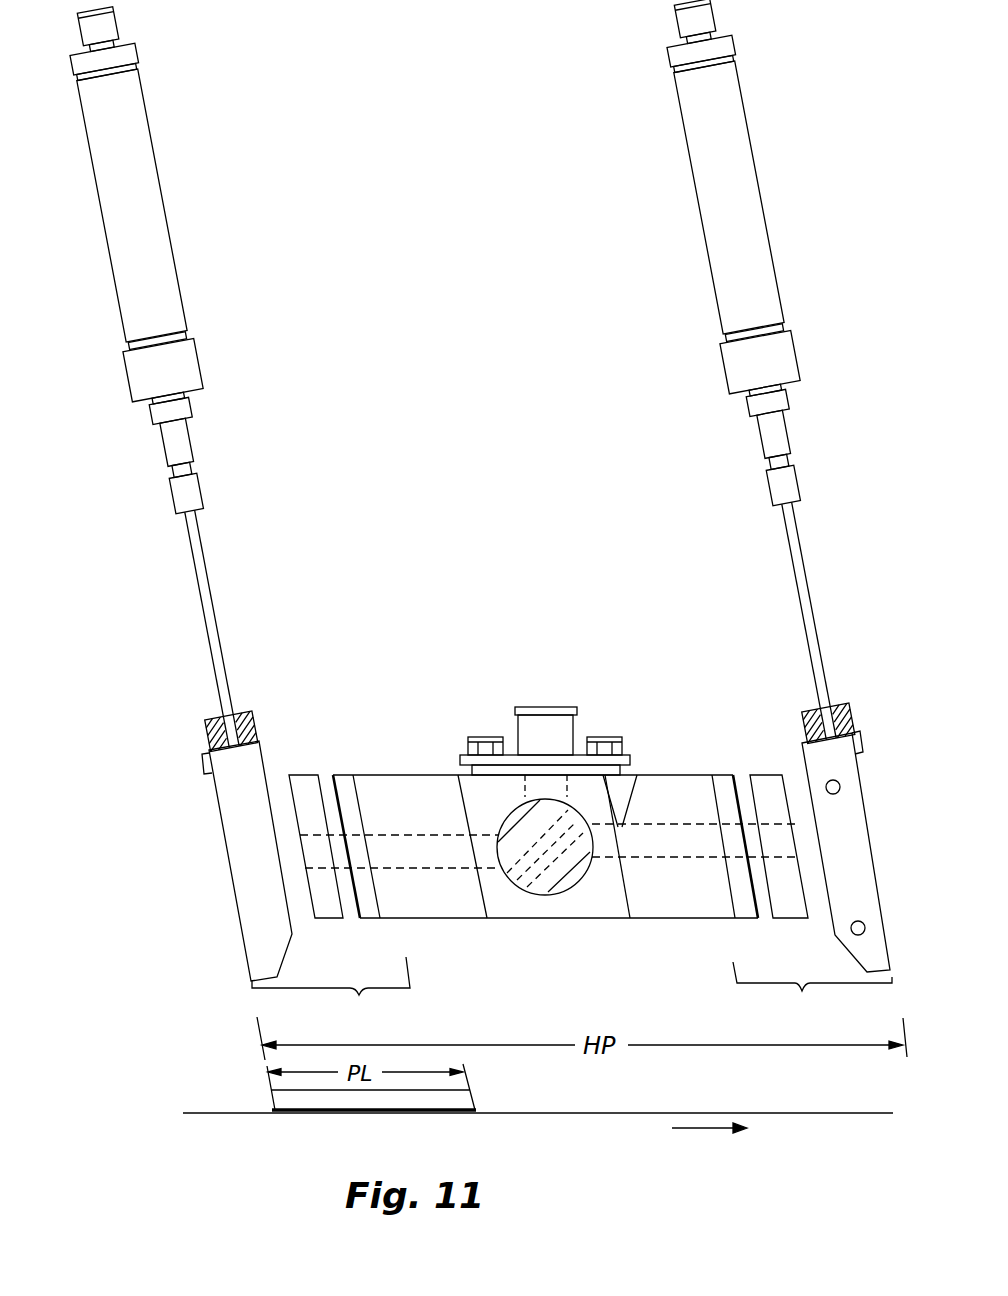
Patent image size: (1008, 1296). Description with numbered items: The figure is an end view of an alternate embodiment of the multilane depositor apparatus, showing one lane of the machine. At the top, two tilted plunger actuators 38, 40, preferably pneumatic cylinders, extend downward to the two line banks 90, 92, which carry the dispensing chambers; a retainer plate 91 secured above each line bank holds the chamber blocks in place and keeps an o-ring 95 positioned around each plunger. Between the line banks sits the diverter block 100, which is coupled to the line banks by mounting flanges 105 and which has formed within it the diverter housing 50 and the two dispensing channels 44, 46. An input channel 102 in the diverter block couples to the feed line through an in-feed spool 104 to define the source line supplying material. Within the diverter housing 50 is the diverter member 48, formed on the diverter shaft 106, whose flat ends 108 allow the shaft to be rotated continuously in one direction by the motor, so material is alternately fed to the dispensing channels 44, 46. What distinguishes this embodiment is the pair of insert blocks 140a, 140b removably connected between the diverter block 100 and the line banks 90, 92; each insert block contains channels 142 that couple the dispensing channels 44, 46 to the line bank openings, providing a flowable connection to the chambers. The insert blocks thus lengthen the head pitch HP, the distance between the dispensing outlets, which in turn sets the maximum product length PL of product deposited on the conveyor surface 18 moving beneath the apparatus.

The plunger actuator 38 is at (170, 227).
The plunger actuator 40 is at (692, 175).
The retainer plate 91 is at (213, 720).
The o-ring 95 is at (215, 746).
The line bank 90 is at (252, 878).
The line bank 92 is at (848, 815).
The insert block 140a is at (291, 762).
The insert block 140b is at (748, 763).
The channel 142 is at (313, 835).
The mounting flange 105 is at (343, 775).
The diverter block 100 is at (412, 764).
The input channel 102 is at (572, 792).
The in-feed spool 104 is at (534, 696).
The flat end 108 is at (592, 847).
The diverter housing 50 is at (505, 818).
The dispensing channel 44 is at (418, 870).
The dispensing channel 46 is at (642, 857).
The diverter member 48 is at (517, 877).
The diverter shaft 106 is at (589, 885).
The surface 18 is at (622, 1113).